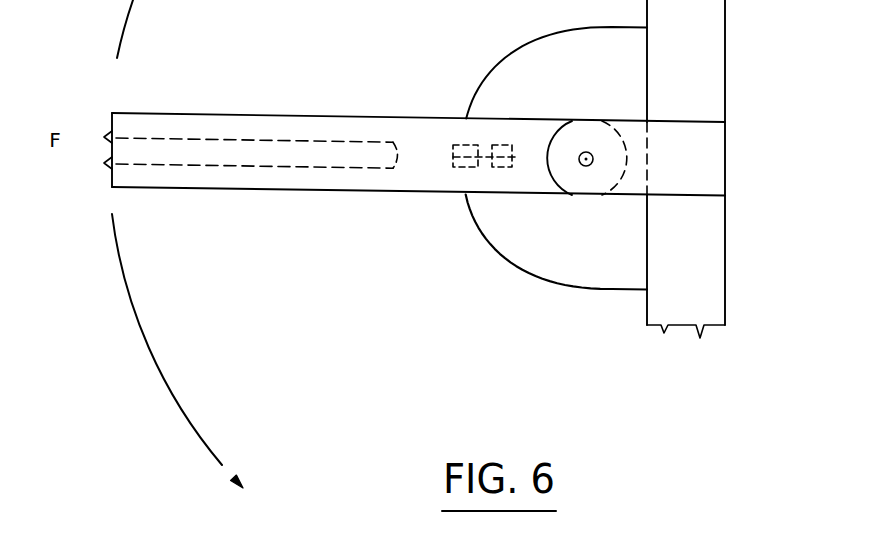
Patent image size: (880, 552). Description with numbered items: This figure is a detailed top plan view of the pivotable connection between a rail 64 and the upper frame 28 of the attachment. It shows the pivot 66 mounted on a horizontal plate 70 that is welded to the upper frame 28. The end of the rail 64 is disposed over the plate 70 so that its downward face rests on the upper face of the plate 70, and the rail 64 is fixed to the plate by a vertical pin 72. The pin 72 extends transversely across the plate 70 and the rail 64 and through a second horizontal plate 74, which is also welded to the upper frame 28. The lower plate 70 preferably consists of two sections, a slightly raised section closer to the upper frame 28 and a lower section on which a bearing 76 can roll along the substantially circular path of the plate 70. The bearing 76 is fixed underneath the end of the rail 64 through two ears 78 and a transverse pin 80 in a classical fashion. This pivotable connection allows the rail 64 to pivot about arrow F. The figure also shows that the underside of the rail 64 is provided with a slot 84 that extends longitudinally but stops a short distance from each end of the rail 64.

The upper frame 28 is at (712, 78).
The rail 64 is at (331, 183).
The pivot 66 is at (505, 268).
The horizontal plate 70 is at (595, 248).
The vertical pin 72 is at (590, 150).
The second horizontal plate 74 is at (685, 168).
The bearing 76 is at (482, 143).
The ears 78 is at (507, 143).
The transverse pin 80 is at (453, 156).
The slot 84 is at (258, 155).